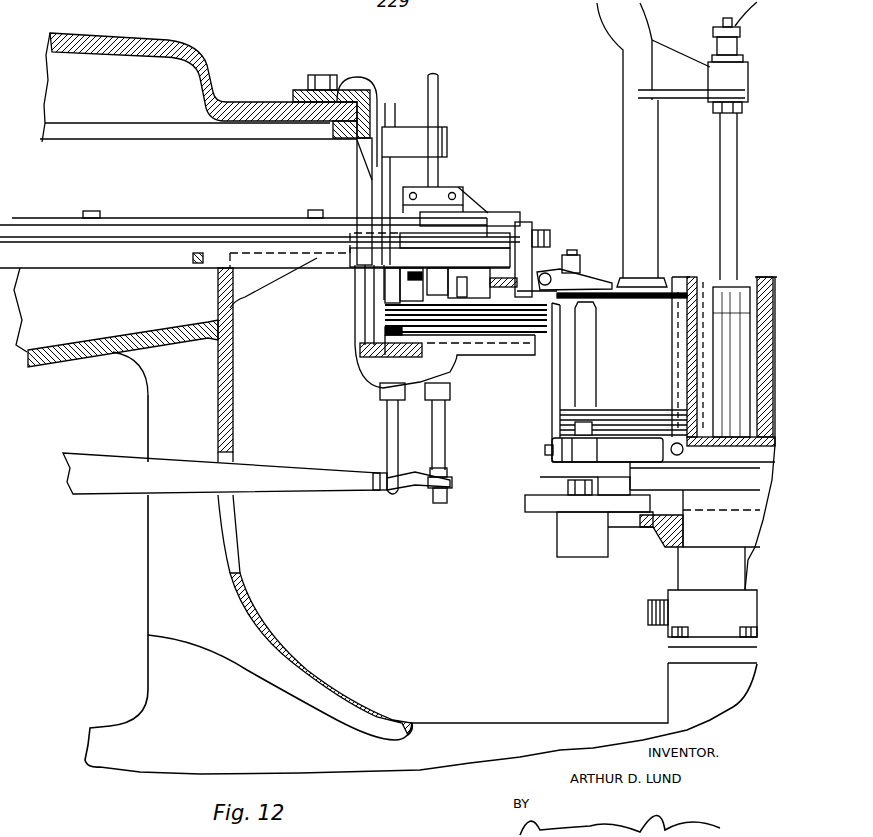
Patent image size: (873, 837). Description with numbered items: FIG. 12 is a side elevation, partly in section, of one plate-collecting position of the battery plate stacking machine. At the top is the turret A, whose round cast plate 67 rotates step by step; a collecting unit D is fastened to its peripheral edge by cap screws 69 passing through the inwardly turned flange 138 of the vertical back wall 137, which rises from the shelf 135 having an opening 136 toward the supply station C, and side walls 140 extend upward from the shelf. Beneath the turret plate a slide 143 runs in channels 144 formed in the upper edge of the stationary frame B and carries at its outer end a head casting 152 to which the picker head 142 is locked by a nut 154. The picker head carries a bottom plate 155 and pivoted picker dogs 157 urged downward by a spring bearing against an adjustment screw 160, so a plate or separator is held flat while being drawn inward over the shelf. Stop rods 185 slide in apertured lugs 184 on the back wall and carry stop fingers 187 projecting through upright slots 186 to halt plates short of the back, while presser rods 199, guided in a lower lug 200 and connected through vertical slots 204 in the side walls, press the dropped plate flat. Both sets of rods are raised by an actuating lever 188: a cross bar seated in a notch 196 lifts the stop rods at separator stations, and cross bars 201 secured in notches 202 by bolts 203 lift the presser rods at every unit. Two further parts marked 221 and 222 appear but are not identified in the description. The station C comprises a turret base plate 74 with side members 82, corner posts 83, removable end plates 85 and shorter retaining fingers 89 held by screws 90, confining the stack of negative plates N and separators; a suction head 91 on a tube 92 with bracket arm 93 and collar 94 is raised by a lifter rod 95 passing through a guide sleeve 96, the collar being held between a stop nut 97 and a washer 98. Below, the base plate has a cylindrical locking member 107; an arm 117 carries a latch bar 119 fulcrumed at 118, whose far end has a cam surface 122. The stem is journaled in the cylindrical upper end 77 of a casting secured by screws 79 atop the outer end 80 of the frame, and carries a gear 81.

The turret A is at (115, 33).
The round cast plate 67 is at (203, 60).
The inwardly turned flange 138 is at (295, 90).
The cap screws 69 is at (337, 55).
The back wall 137 is at (357, 176).
The apertured lugs 184 is at (407, 127).
The upright slots 186 is at (403, 195).
The side walls 140 is at (467, 199).
The head casting 152 is at (518, 213).
The nut 154 is at (532, 232).
The picker head 142 is at (562, 243).
The adjustment screw 160 is at (580, 253).
The picker dog 157 is at (595, 276).
The bottom plate 155 is at (600, 299).
The slideways or channels 144 is at (124, 243).
The key 221 is at (193, 258).
The bar 222 is at (470, 256).
The slide 143 is at (68, 280).
The collecting or receiving units D is at (358, 321).
The stationary frames B is at (311, 671).
The actuating lever 188 is at (289, 500).
The stop fingers 187 is at (383, 298).
The vertical slots 204 is at (450, 292).
The shelf or bottom 135 is at (378, 395).
The opening 136 is at (466, 350).
The lower lug 200 is at (430, 398).
The presser rods 199 is at (447, 428).
The stop rods 185 is at (386, 431).
The notch 196 is at (378, 468).
The cross bars 201 is at (447, 469).
The notches 202 is at (452, 483).
The bolts 203 is at (441, 503).
The retaining fingers 89 is at (549, 385).
The supply stations C is at (549, 421).
The screws 90 is at (547, 451).
The tube 92 is at (623, 152).
The bracket arm 93 is at (691, 70).
The collar 94 is at (728, 82).
The washer 98 is at (712, 50).
The stop nut 97 is at (713, 110).
The lifter rod or shaft 95 is at (720, 191).
The suction head 91 is at (680, 262).
The end or back plates 85 is at (687, 352).
The side members 82 is at (716, 281).
The guide sleeve 96 is at (734, 283).
The negative plates N is at (641, 300).
The corner posts 83 is at (600, 341).
The turret base plate 74 is at (663, 450).
The locking member or turret neck 107 is at (702, 517).
The fulcrum 118 is at (566, 488).
The latch bar 119 is at (556, 520).
The angular cam surface 122 is at (524, 509).
The arm 117 is at (649, 535).
The cylindrical upper end 77 is at (679, 565).
The screws 79 is at (741, 628).
The gear 81 is at (650, 619).
The outer end 80 is at (673, 689).